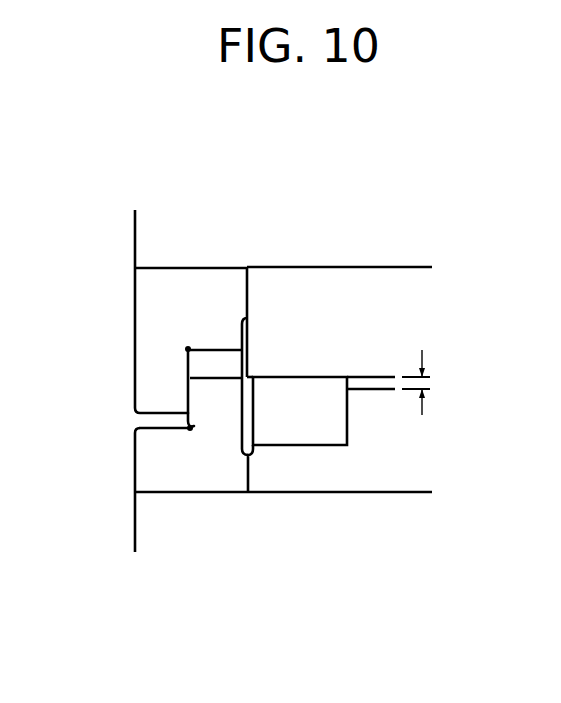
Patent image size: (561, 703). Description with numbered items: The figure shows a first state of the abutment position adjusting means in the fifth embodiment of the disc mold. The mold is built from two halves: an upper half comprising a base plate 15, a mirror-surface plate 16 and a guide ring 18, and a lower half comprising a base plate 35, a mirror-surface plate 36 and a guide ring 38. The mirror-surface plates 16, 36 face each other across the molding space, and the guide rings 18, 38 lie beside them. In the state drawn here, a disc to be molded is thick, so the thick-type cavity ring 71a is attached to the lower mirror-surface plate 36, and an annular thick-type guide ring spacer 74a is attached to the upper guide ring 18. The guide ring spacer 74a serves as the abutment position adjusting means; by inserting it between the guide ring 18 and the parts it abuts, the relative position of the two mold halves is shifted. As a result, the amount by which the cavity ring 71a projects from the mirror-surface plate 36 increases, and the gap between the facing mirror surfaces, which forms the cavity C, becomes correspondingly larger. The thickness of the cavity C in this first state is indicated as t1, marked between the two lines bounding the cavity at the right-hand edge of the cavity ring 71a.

The base plate 15 is at (146, 238).
The mirror-surface plate 16 is at (362, 303).
The guide ring 18 is at (185, 288).
The annular thick-type guide ring spacer 74a is at (218, 363).
The thick-type cavity ring 71a is at (311, 428).
The cavity C is at (383, 382).
The thickness of the cavity t1 is at (424, 401).
The base plate 35 is at (151, 520).
The mirror-surface plate 36 is at (402, 478).
The guide ring 38 is at (209, 483).